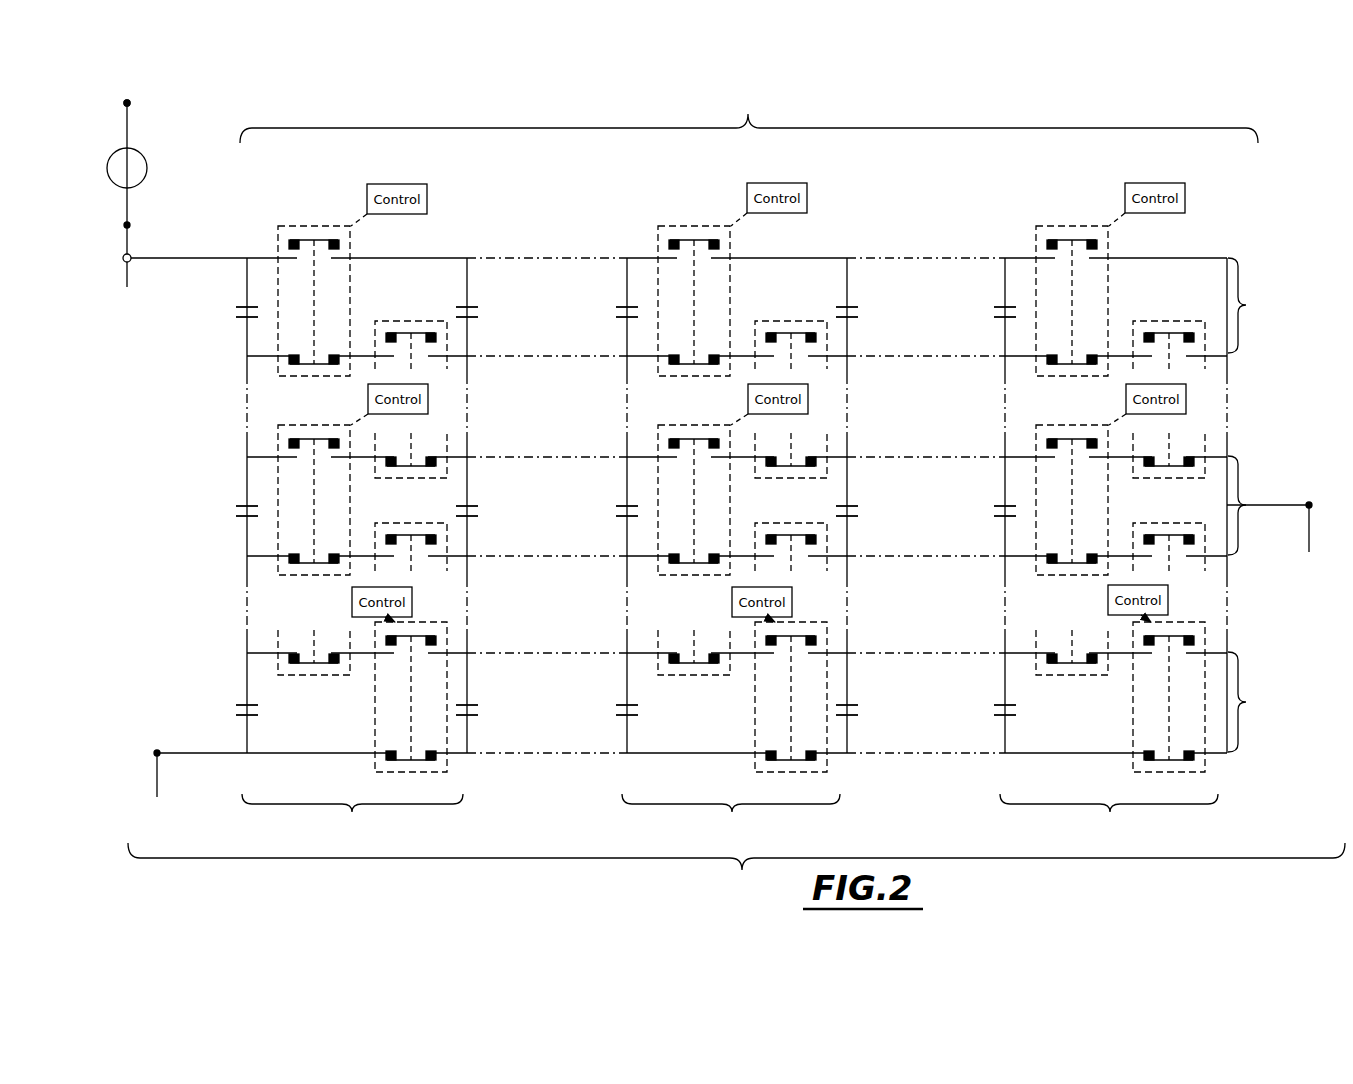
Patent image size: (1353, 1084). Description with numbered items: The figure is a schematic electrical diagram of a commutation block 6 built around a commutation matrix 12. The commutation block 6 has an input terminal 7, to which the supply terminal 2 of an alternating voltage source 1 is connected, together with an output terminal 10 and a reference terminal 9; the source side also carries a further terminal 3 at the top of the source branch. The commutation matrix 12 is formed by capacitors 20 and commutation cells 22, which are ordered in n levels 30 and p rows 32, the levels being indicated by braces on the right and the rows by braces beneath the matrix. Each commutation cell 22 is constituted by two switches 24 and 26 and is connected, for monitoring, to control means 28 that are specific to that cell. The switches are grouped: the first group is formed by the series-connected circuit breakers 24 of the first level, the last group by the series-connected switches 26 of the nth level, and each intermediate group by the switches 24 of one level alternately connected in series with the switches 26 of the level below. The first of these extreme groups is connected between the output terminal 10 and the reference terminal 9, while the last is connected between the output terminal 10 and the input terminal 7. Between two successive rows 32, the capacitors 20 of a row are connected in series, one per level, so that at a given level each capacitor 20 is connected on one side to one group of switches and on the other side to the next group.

The alternating voltage source 1 is at (112, 180).
The supply terminal 2 is at (124, 228).
The phase terminal 3 is at (132, 103).
The commutation block 6 is at (736, 876).
The input terminal 7 is at (126, 266).
The reference terminal 9 is at (154, 752).
The output terminal 10 is at (1310, 502).
The commutation matrix 12 is at (749, 111).
The capacitor 20 is at (990, 716).
The commutation cell 22 is at (650, 422).
The switch 24 is at (320, 362).
The switch 26 is at (688, 444).
The control means 28 is at (860, 400).
The level 30 is at (1260, 505).
The row 32 is at (730, 826).